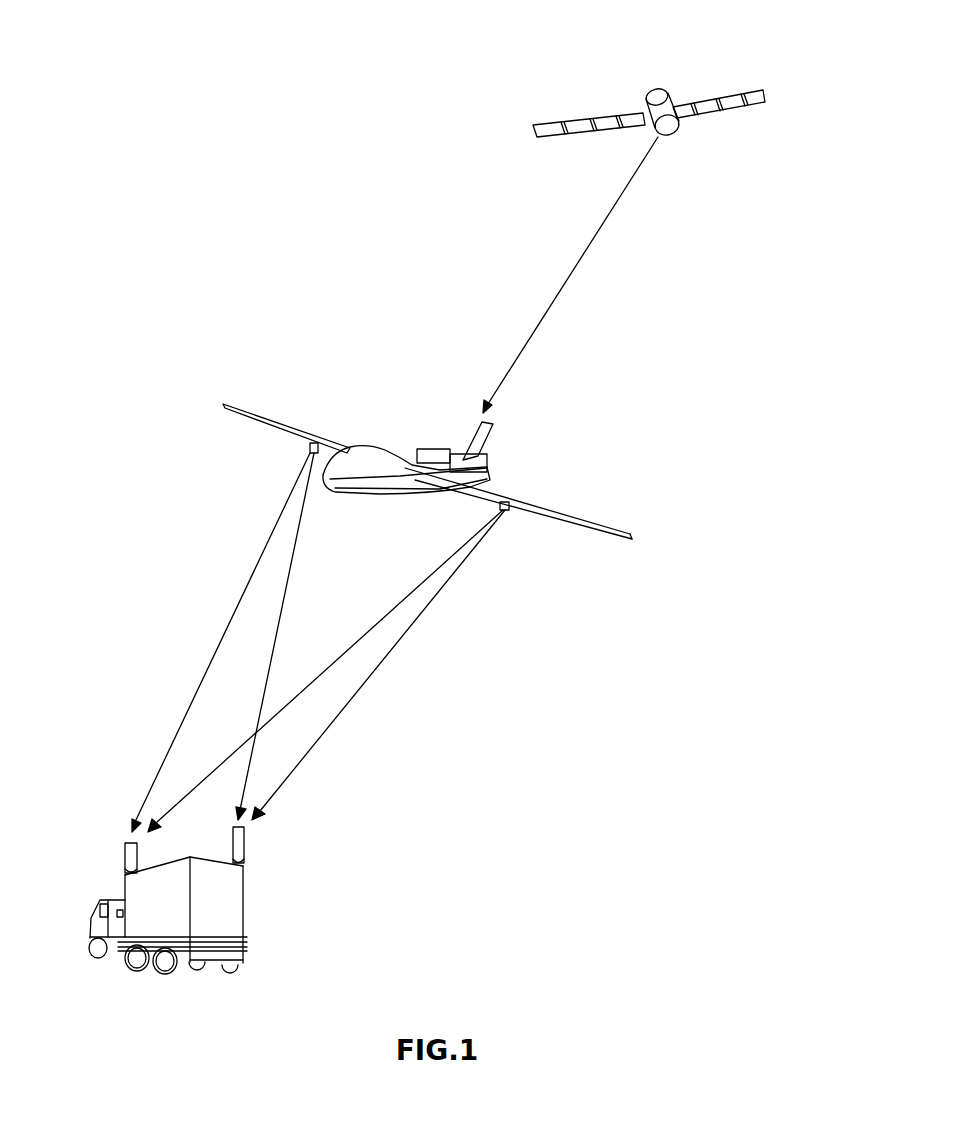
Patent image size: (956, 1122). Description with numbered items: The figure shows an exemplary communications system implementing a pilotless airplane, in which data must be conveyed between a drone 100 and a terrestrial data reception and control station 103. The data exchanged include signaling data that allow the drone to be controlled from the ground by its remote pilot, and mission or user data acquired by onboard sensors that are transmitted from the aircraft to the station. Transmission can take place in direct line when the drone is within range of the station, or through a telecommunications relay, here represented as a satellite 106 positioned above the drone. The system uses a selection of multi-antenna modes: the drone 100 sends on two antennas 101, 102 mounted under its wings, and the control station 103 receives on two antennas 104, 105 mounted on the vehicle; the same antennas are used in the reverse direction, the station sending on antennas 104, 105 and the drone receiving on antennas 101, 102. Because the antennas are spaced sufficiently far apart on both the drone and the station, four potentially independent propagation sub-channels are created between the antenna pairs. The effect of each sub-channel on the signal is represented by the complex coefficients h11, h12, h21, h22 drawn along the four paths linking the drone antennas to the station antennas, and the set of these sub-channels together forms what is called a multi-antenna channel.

The drone 100 is at (488, 448).
The sending antenna 101 is at (505, 512).
The sending antenna 102 is at (310, 445).
The data reception and control station 103 is at (132, 922).
The receiving antenna 104 is at (125, 857).
The receiving antenna 105 is at (246, 848).
The satellite 106 is at (665, 100).
The complex coefficient h11 is at (244, 590).
The complex coefficient h12 is at (288, 583).
The complex coefficient h21 is at (346, 650).
The complex coefficient h22 is at (413, 623).